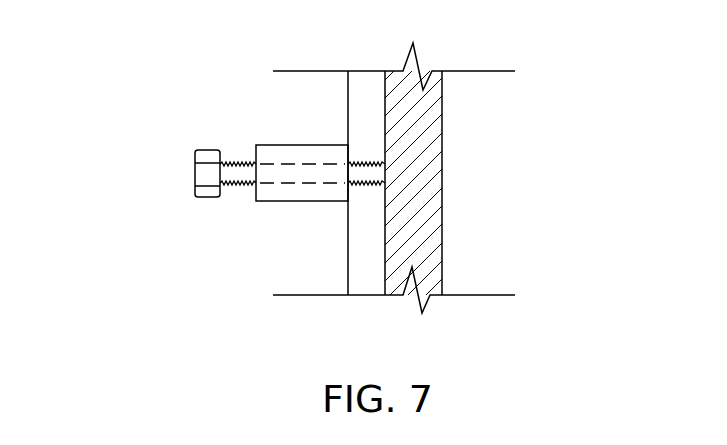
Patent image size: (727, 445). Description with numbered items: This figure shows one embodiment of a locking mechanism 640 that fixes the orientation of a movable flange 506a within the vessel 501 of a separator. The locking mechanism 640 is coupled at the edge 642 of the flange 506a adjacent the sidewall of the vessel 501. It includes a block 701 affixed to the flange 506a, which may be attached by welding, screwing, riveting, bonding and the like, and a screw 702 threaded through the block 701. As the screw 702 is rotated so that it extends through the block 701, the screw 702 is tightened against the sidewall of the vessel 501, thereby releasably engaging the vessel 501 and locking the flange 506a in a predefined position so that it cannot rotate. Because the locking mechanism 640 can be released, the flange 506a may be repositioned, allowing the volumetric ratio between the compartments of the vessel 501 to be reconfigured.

The locking mechanism 640 is at (166, 110).
The flange 506a is at (283, 94).
The edge 642 is at (348, 95).
The vessel 501 is at (442, 145).
The block 701 is at (278, 201).
The screw 702 is at (195, 172).